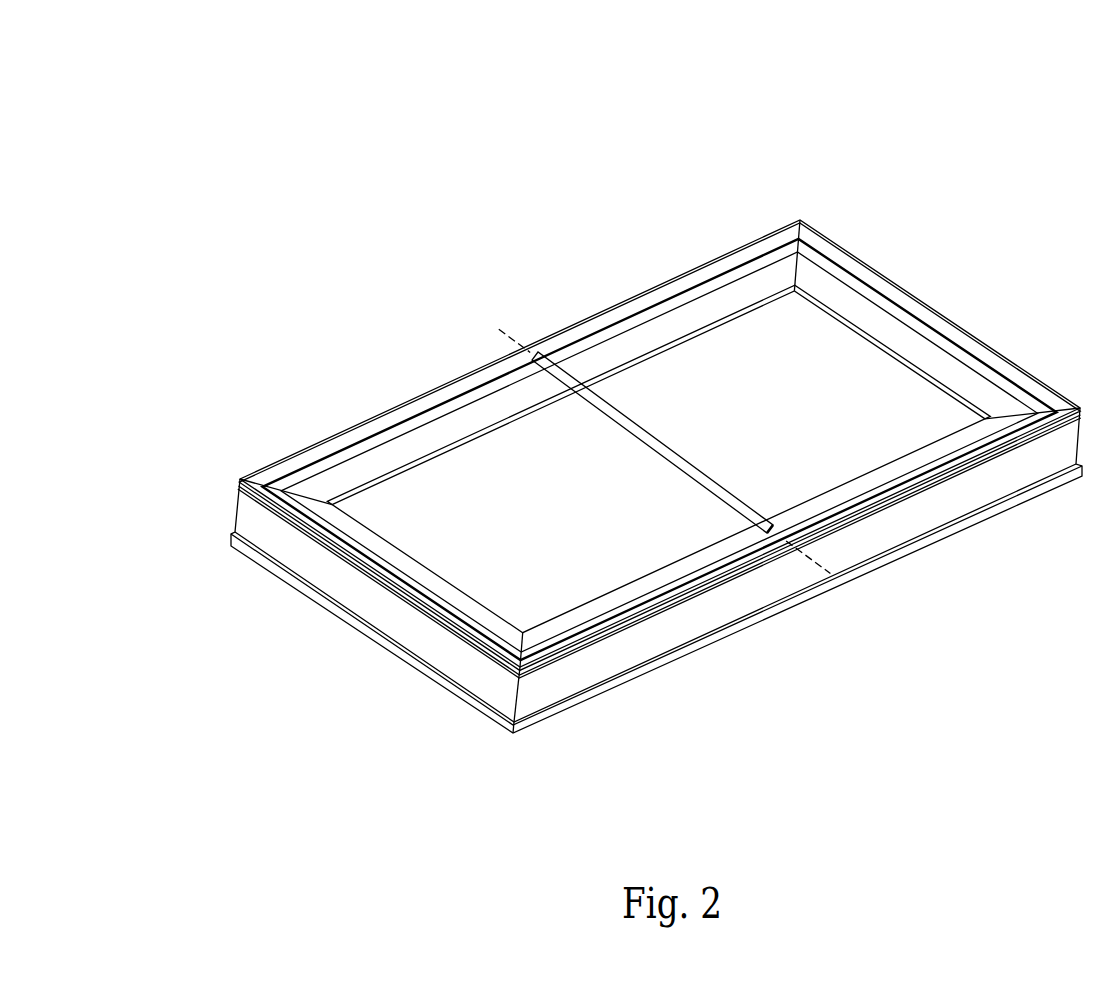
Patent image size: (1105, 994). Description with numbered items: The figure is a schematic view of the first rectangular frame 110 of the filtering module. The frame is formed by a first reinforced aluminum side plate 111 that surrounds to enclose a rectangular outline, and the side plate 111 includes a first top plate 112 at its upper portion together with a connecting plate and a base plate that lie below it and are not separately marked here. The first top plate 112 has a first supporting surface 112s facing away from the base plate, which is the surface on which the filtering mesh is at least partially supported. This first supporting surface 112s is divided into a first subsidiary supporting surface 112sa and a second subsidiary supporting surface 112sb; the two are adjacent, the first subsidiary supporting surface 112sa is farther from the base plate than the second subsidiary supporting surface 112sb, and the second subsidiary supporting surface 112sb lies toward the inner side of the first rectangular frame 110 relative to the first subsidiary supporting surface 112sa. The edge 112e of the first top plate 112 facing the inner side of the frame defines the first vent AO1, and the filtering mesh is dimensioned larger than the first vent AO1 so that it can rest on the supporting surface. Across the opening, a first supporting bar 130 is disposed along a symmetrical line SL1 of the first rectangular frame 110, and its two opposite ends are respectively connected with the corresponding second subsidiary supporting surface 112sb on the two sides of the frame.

The first rectangular frame 110 is at (103, 49).
The first reinforced aluminum side plate 111 is at (892, 522).
The first top plate 112 is at (283, 502).
The first supporting surface 112s is at (404, 322).
The first subsidiary supporting surface 112sa is at (317, 457).
The second subsidiary supporting surface 112sb is at (358, 453).
The edge 112e is at (408, 565).
The first supporting bar 130 is at (546, 362).
The first vent AO1 is at (470, 482).
The symmetrical line SL1 is at (826, 562).